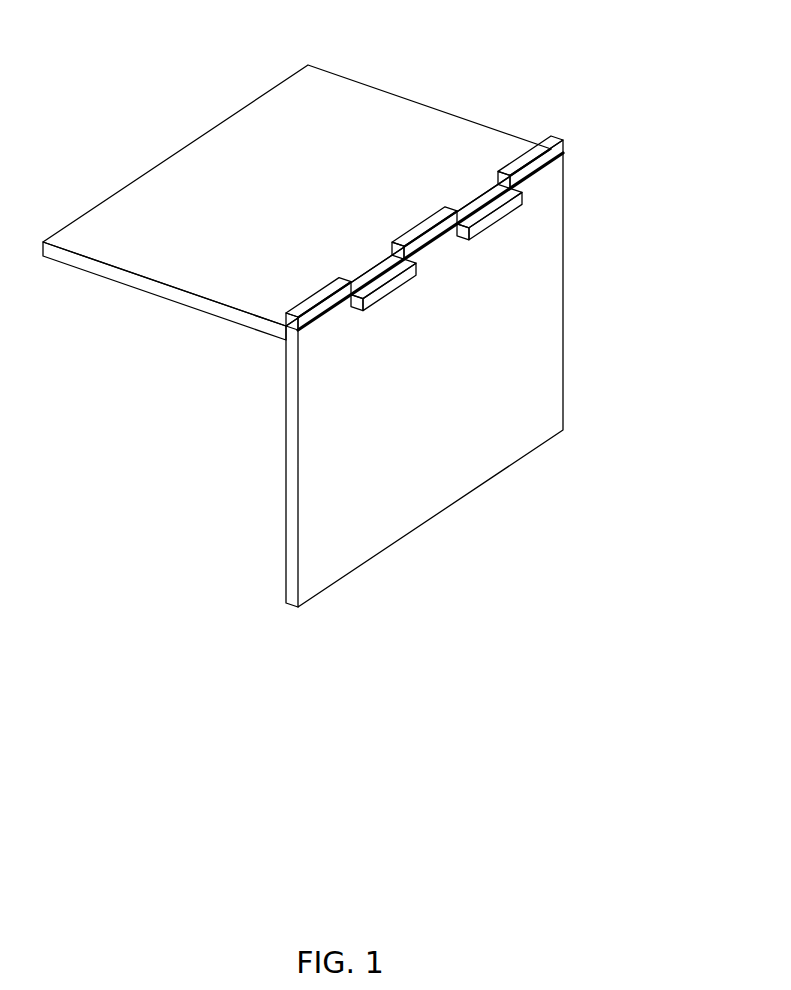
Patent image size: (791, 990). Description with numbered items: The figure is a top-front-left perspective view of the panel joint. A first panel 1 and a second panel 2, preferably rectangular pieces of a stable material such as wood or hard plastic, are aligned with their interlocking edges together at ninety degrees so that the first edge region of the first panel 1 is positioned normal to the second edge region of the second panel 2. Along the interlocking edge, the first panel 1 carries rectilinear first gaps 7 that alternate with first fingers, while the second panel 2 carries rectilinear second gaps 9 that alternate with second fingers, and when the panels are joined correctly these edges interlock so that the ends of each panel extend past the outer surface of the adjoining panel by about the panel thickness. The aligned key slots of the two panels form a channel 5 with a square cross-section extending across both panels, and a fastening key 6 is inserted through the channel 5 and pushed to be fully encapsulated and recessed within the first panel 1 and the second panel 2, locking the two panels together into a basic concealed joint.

The first panel 1 is at (550, 358).
The second panel 2 is at (360, 103).
The channel 5 is at (576, 147).
The key 6 is at (373, 279).
The first gaps 7 is at (312, 305).
The second gaps 9 is at (397, 285).